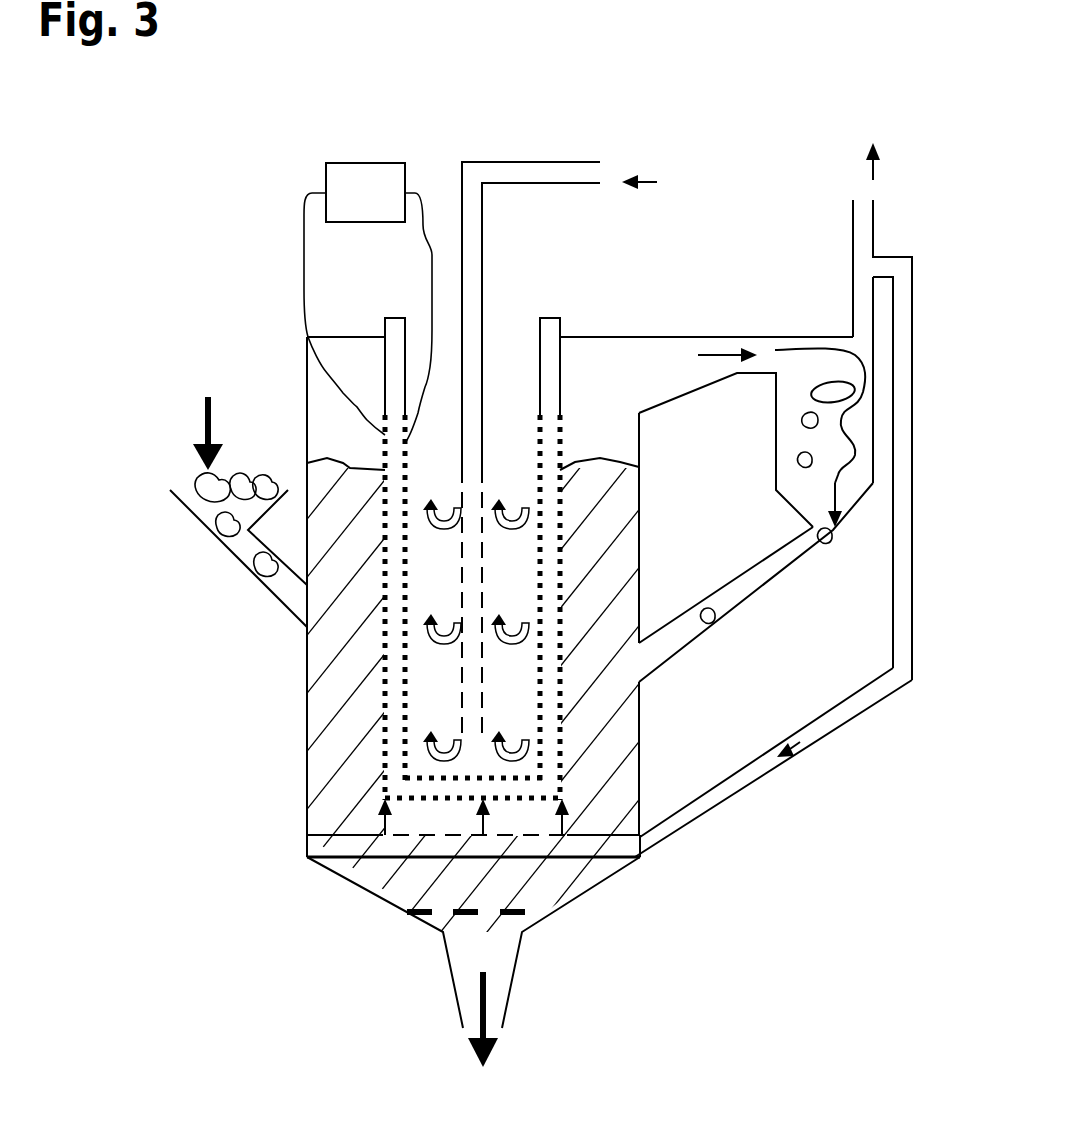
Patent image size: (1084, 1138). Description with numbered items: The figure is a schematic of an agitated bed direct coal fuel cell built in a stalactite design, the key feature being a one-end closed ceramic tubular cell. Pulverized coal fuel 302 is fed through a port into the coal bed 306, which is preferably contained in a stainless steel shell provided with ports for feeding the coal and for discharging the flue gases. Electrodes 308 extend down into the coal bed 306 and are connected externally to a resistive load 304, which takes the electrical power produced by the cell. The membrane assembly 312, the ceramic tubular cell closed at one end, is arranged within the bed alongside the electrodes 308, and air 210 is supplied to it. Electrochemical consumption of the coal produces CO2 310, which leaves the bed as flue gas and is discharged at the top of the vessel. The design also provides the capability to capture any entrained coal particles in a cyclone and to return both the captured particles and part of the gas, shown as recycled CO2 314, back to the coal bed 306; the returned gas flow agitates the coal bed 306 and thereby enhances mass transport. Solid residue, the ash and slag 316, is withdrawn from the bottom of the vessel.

The air inlet 210 is at (584, 442).
The coal fuel 302 is at (227, 469).
The resistive load 304 is at (361, 280).
The coal bed 306 is at (333, 782).
The electrodes 308 is at (372, 652).
The CO2 310 is at (771, 411).
The membrane assembly 312 is at (678, 263).
The recycled CO2 314 is at (779, 762).
The ash and slag 316 is at (473, 990).